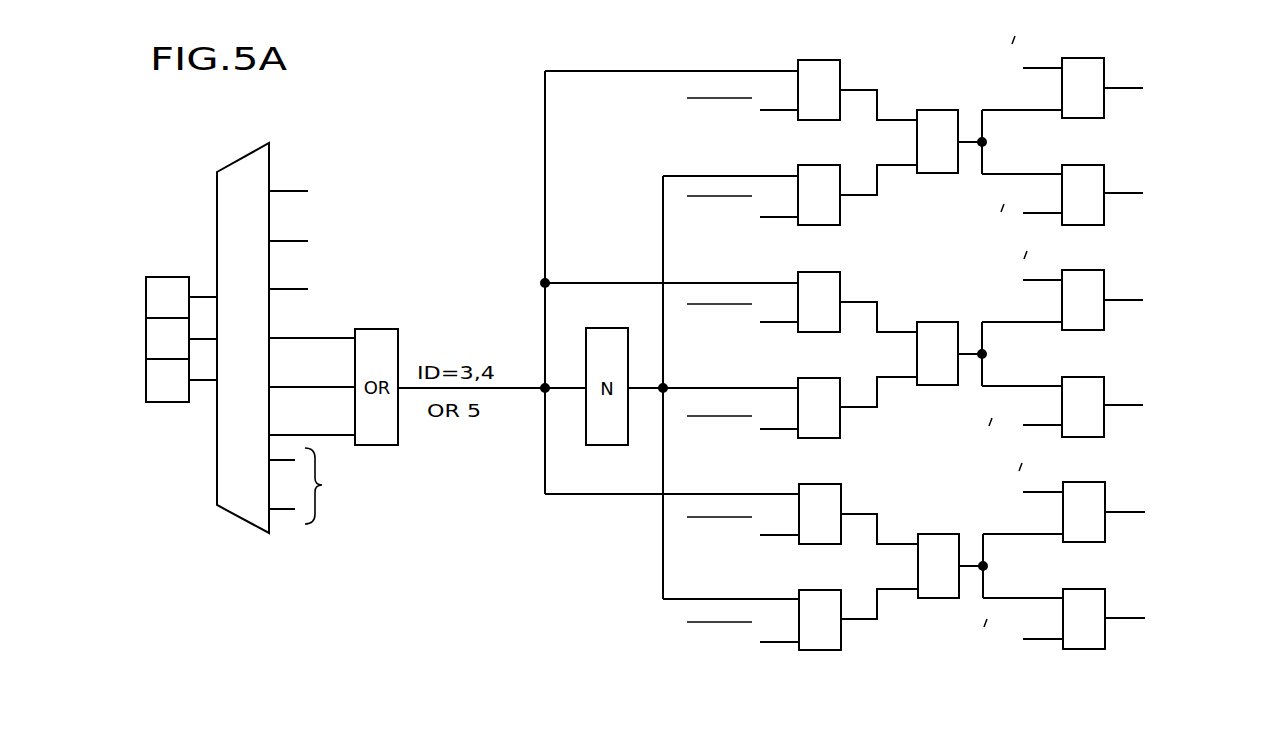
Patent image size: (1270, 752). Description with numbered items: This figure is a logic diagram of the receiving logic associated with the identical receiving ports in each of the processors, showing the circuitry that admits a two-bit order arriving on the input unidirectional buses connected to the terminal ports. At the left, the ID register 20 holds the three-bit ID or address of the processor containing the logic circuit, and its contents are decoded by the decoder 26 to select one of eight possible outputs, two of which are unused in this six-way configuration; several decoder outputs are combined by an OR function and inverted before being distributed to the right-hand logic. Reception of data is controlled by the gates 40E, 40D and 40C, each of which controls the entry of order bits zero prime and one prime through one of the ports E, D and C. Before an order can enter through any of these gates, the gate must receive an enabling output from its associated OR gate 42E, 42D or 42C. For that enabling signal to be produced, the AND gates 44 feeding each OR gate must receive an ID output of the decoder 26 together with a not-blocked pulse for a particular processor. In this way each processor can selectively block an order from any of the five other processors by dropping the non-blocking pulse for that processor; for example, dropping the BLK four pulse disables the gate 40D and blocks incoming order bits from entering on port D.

The ID register 20 is at (170, 277).
The decoder 26 is at (242, 500).
The AND gates 44 is at (823, 175).
The OR gate 42E is at (937, 112).
The OR gate 42D is at (937, 324).
The OR gate 42C is at (937, 536).
The gate 40E is at (1105, 141).
The gate 40D is at (1115, 367).
The gate 40C is at (1038, 665).